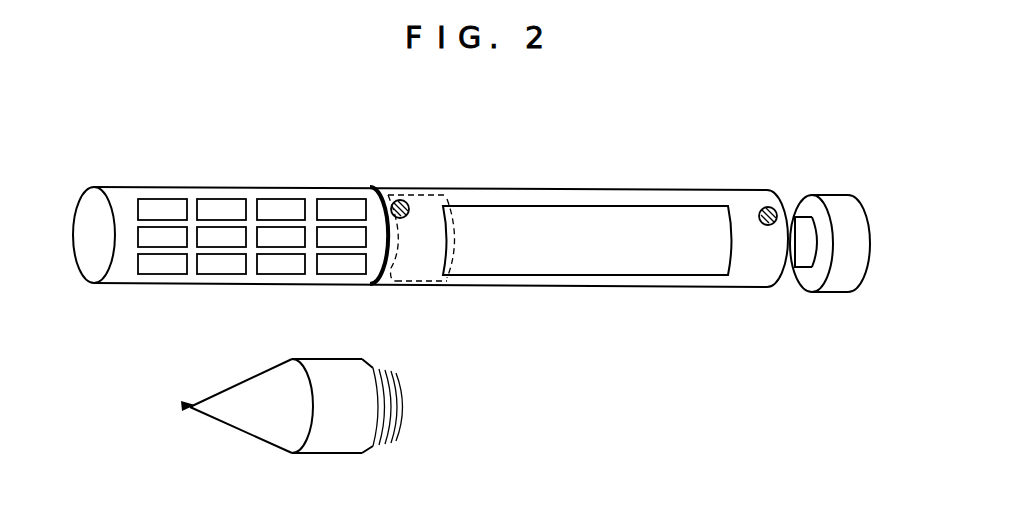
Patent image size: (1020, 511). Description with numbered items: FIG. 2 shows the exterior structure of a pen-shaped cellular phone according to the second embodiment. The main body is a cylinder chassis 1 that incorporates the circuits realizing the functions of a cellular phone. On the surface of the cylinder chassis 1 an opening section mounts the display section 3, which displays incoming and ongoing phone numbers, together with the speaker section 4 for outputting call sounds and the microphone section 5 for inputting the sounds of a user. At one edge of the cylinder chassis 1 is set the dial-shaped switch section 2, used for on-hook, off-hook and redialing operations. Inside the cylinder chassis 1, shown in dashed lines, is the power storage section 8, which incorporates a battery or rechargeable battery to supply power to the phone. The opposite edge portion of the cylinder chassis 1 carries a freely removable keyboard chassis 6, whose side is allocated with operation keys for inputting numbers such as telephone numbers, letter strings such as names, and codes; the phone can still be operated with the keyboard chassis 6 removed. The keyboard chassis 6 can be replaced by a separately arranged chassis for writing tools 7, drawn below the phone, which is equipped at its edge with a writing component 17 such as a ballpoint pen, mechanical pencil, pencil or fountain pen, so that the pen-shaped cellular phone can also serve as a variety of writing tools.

The cylinder chassis 1 is at (597, 304).
The dial-shaped switch section 2 is at (825, 196).
The display section 3 is at (563, 224).
The speaker section 4 is at (770, 206).
The microphone section 5 is at (398, 199).
The keyboard chassis 6 is at (250, 188).
The chassis for writing tools 7 is at (330, 359).
The power storage section 8 is at (420, 264).
The writing component 17 is at (189, 409).